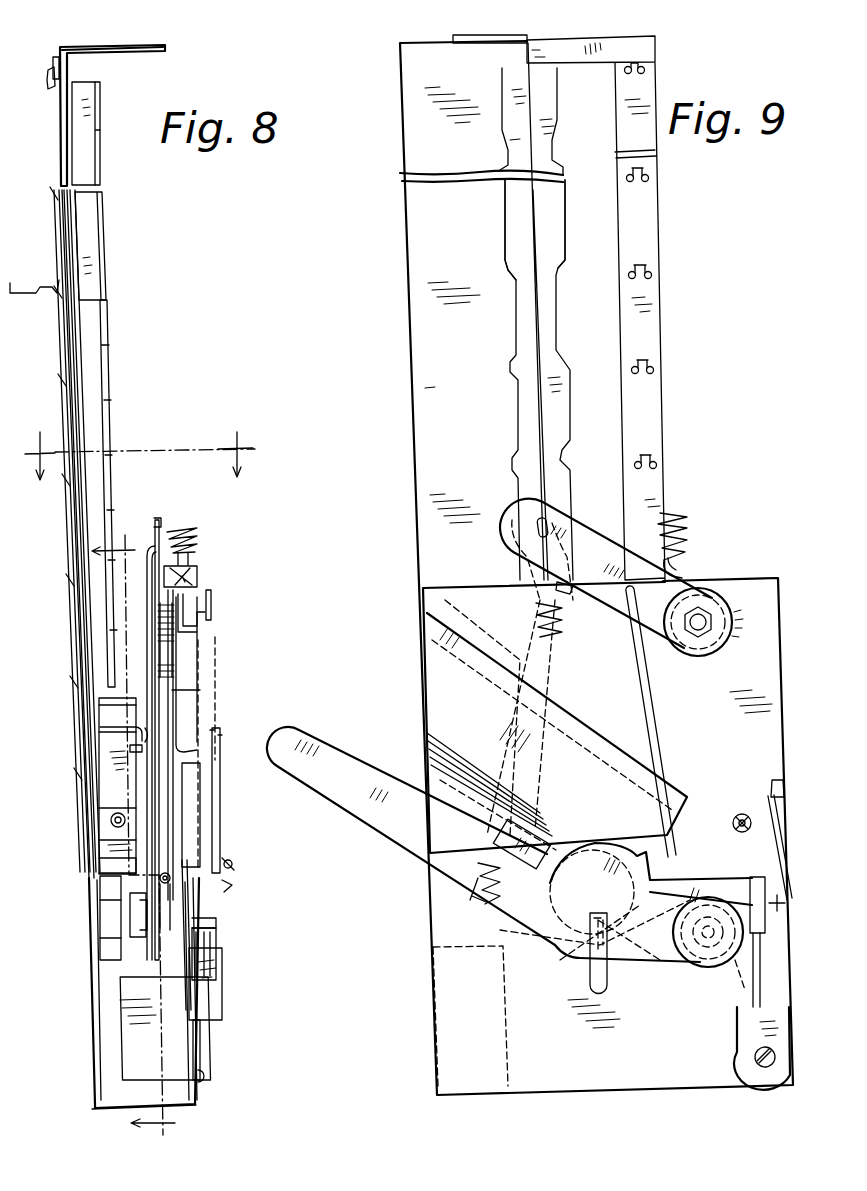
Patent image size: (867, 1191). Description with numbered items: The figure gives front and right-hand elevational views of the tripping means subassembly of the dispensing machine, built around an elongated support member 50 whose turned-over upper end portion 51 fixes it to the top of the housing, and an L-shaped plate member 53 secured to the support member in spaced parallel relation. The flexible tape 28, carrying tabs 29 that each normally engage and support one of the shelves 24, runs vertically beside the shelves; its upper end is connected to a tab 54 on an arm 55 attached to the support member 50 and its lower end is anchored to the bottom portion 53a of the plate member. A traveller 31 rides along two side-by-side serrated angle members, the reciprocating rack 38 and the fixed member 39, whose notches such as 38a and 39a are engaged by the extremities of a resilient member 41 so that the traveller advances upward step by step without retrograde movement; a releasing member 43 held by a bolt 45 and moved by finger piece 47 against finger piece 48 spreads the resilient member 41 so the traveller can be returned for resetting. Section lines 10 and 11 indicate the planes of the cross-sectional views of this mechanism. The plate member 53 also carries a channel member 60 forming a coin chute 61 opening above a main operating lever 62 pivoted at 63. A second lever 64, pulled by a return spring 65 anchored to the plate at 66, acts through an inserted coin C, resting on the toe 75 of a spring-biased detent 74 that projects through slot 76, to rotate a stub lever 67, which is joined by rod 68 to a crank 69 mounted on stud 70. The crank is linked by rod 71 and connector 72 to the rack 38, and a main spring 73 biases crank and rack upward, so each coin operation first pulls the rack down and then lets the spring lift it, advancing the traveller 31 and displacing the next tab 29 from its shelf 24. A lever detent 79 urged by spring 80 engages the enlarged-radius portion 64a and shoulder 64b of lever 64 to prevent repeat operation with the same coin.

In FIG. 8, the section line 10- 10 is at (138, 443).
In FIG. 8, the section line 11- 11 is at (152, 827).
In FIG. 8, the shelves 24 is at (22, 283).
In FIG. 8, the flexible tape 28 is at (60, 222).
In FIG. 9, the flexible tape 28 is at (648, 430).
In FIG. 8, the tabs 29 is at (60, 382).
In FIG. 9, the tabs 29 is at (644, 267).
In FIG. 8, the traveller 31 is at (114, 787).
In FIG. 8, the reciprocating angle member 38 is at (96, 263).
In FIG. 9, the reciprocating angle member 38 is at (515, 144).
In FIG. 8, the next succeeding notch 38a is at (108, 384).
In FIG. 9, the next succeeding notch 38a is at (516, 268).
In FIG. 9, the fixed angle member 39 is at (543, 153).
In FIG. 9, the notch 39a is at (560, 271).
In FIG. 8, the resilient member 41 is at (140, 854).
In FIG. 8, the releasing member 43 is at (133, 708).
In FIG. 8, the bolt 45 is at (133, 748).
In FIG. 8, the finger piece 47 is at (118, 727).
In FIG. 8, the finger piece 48 is at (110, 836).
In FIG. 8, the support member 50 is at (68, 74).
In FIG. 9, the support member 50 is at (428, 429).
In FIG. 8, the upper end portion 51 is at (138, 48).
In FIG. 9, the upper end portion 51 is at (487, 35).
In FIG. 8, the plate member 53 is at (200, 699).
In FIG. 9, the plate member 53 is at (480, 593).
In FIG. 8, the bottom portion 53a is at (112, 1108).
In FIG. 8, the tab 54 is at (48, 77).
In FIG. 8, the arm 55 is at (56, 58).
In FIG. 9, the arm 55 is at (617, 43).
In FIG. 8, the channel member 60 is at (193, 654).
In FIG. 9, the channel member 60 is at (432, 678).
In FIG. 8, the coin chute 61 is at (184, 678).
In FIG. 9, the coin chute 61 is at (432, 634).
In FIG. 8, the main operating lever 62 is at (218, 804).
In FIG. 9, the main operating lever 62 is at (410, 831).
In FIG. 9, the pivot 63 is at (674, 965).
In FIG. 9, the second lever 64 is at (627, 858).
In FIG. 9, the enlarged radius portion 64a is at (753, 929).
In FIG. 9, the shoulder 64b is at (733, 962).
In FIG. 8, the return spring 65 is at (205, 627).
In FIG. 9, the return spring 65 is at (536, 621).
In FIG. 8, the spring connection point 66 is at (212, 603).
In FIG. 9, the spring connection point 66 is at (556, 588).
In FIG. 8, the stub lever 67 is at (230, 863).
In FIG. 9, the stub lever 67 is at (725, 819).
In FIG. 9, the rod 68 is at (654, 731).
In FIG. 8, the crank 69 is at (158, 518).
In FIG. 9, the crank 69 is at (597, 553).
In FIG. 9, the stud 70 is at (704, 636).
In FIG. 8, the rod 71 is at (152, 721).
In FIG. 9, the rod 71 is at (540, 521).
In FIG. 8, the connector 72 is at (135, 937).
In FIG. 8, the main spring 73 is at (190, 530).
In FIG. 9, the main spring 73 is at (680, 514).
In FIG. 8, the spring biased detent 74 is at (173, 941).
In FIG. 8, the toe 75 is at (194, 953).
In FIG. 9, the toe 75 is at (560, 950).
In FIG. 9, the slot 76 is at (588, 978).
In FIG. 8, the lever detent 79 is at (194, 1038).
In FIG. 9, the lever detent 79 is at (755, 1024).
In FIG. 9, the spring 80 is at (768, 800).
In FIG. 8, the coin C is at (194, 926).
In FIG. 9, the coin C is at (590, 860).